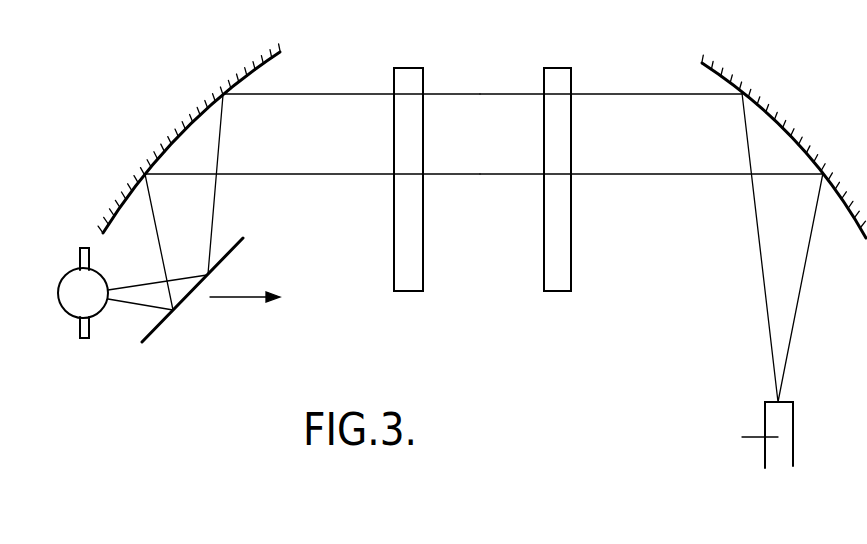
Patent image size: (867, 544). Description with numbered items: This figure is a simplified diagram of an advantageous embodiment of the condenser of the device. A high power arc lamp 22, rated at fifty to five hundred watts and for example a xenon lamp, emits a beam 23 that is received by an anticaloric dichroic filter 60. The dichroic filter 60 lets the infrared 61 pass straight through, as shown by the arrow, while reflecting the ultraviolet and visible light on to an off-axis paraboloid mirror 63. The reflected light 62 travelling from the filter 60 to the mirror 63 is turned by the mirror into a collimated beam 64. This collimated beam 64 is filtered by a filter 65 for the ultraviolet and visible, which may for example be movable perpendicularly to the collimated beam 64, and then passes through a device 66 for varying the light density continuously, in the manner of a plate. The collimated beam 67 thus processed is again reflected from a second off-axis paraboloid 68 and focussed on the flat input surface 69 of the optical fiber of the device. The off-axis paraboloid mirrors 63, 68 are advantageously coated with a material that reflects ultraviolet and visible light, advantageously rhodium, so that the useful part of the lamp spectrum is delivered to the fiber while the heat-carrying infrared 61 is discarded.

The high power arc lamp 22 is at (78, 302).
The beam 23 is at (138, 297).
The anticaloric dichroic filter 60 is at (162, 322).
The infrared 61 is at (245, 291).
The reflected light beam 62 is at (183, 222).
The off-axis paraboloid mirror 63 is at (207, 98).
The collimated beam 64 is at (352, 92).
The filter 65 is at (413, 255).
The device for varying the light density 66 is at (560, 268).
The collimated beam 67 is at (642, 92).
The second off-axis paraboloid 68 is at (775, 112).
The flat input surface 69 is at (775, 402).